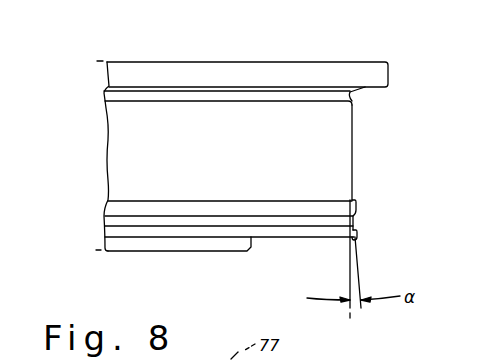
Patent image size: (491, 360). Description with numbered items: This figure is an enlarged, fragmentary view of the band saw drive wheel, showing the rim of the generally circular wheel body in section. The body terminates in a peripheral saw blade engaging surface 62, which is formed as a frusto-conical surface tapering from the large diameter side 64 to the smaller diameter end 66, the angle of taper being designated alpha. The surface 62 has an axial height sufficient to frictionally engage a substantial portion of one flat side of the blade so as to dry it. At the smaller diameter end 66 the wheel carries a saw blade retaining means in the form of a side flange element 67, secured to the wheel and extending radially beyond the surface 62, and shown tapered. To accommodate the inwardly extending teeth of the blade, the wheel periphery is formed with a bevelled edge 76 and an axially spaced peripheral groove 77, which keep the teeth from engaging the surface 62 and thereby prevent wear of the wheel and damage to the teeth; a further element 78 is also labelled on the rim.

The peripheral saw blade engaging surface 62 is at (246, 165).
The large diameter side 64 is at (291, 238).
The smaller diameter end 66 is at (245, 100).
The side flange element 67 is at (186, 72).
The bevelled edge 76 is at (360, 238).
The peripheral groove 77 is at (357, 209).
The thin layer 78 is at (292, 95).